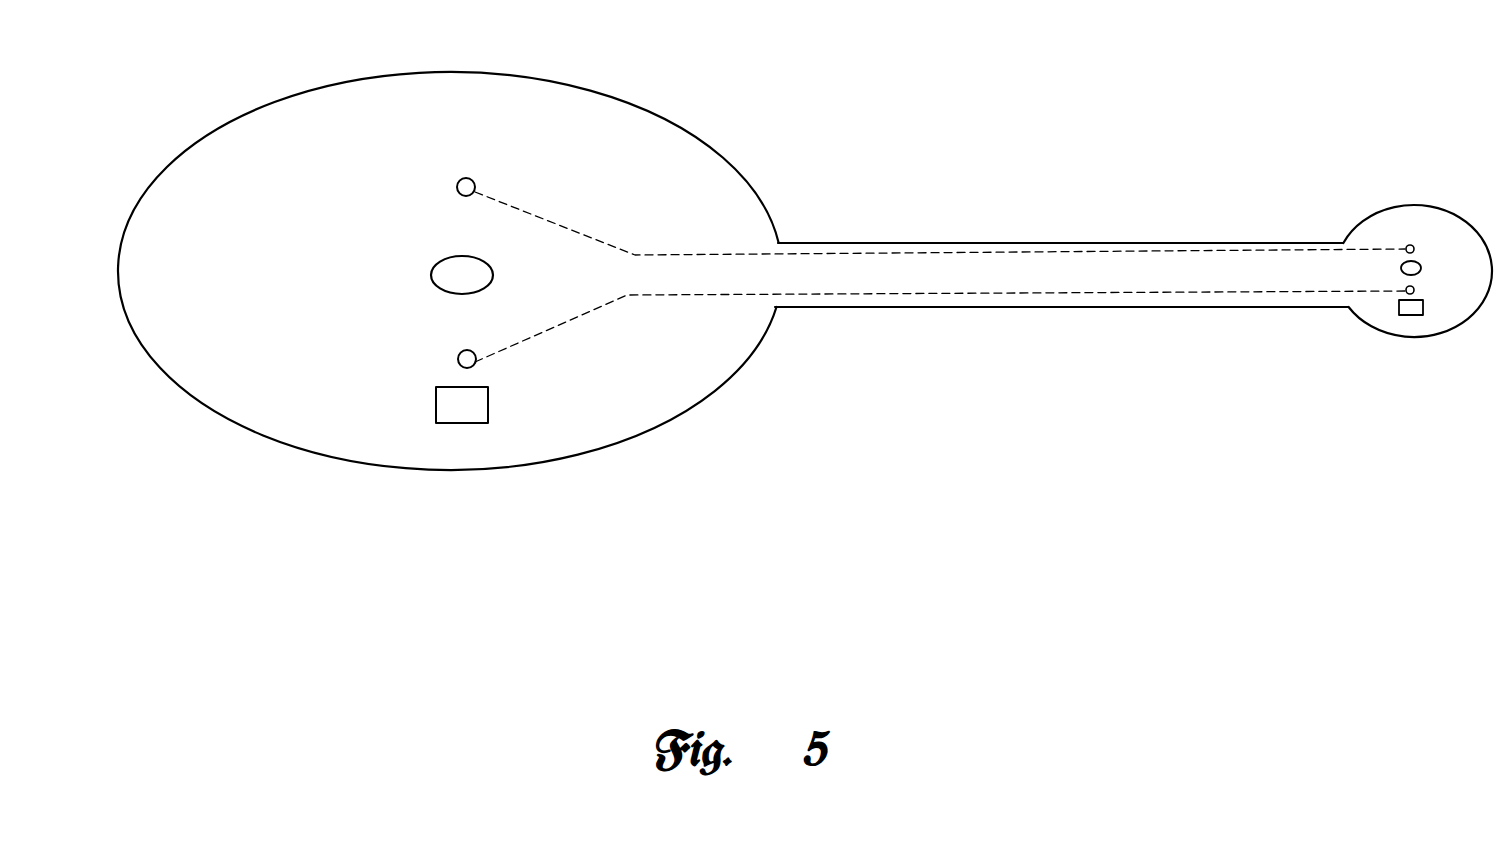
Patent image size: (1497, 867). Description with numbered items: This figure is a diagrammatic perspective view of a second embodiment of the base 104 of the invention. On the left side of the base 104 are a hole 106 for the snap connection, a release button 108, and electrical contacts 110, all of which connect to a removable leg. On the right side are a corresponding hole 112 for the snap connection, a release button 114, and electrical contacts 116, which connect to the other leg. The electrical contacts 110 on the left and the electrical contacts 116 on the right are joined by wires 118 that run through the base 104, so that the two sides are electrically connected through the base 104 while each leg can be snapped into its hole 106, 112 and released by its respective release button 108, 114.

The base 104 is at (973, 243).
The hole 106 is at (440, 258).
The release button 108 is at (465, 423).
The electrical contacts 110 is at (473, 177).
The hole 112 is at (1404, 276).
The release button 114 is at (1405, 316).
The electrical contacts 116 is at (1412, 246).
The wires 118 is at (897, 295).